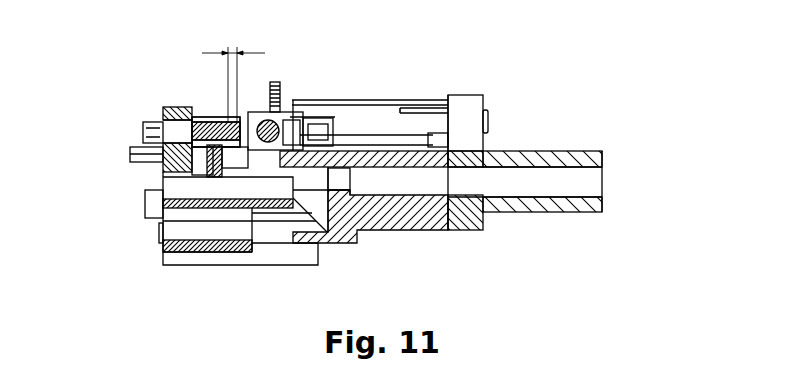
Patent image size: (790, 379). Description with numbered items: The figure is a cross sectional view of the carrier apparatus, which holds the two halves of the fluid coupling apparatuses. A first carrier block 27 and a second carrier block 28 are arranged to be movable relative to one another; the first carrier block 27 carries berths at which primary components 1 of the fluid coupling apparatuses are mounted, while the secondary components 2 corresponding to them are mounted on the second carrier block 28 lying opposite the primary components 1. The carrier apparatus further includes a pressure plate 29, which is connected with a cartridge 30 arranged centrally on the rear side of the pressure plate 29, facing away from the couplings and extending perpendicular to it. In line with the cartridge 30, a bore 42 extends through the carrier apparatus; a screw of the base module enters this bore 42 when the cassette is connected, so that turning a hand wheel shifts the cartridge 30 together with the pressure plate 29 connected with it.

The primary component 1 is at (278, 83).
The secondary component 2 is at (202, 120).
The first carrier block 27 is at (393, 158).
The second carrier block 28 is at (167, 110).
The pressure plate 29 is at (473, 110).
The cartridge 30 is at (533, 197).
The bore 42 is at (430, 180).